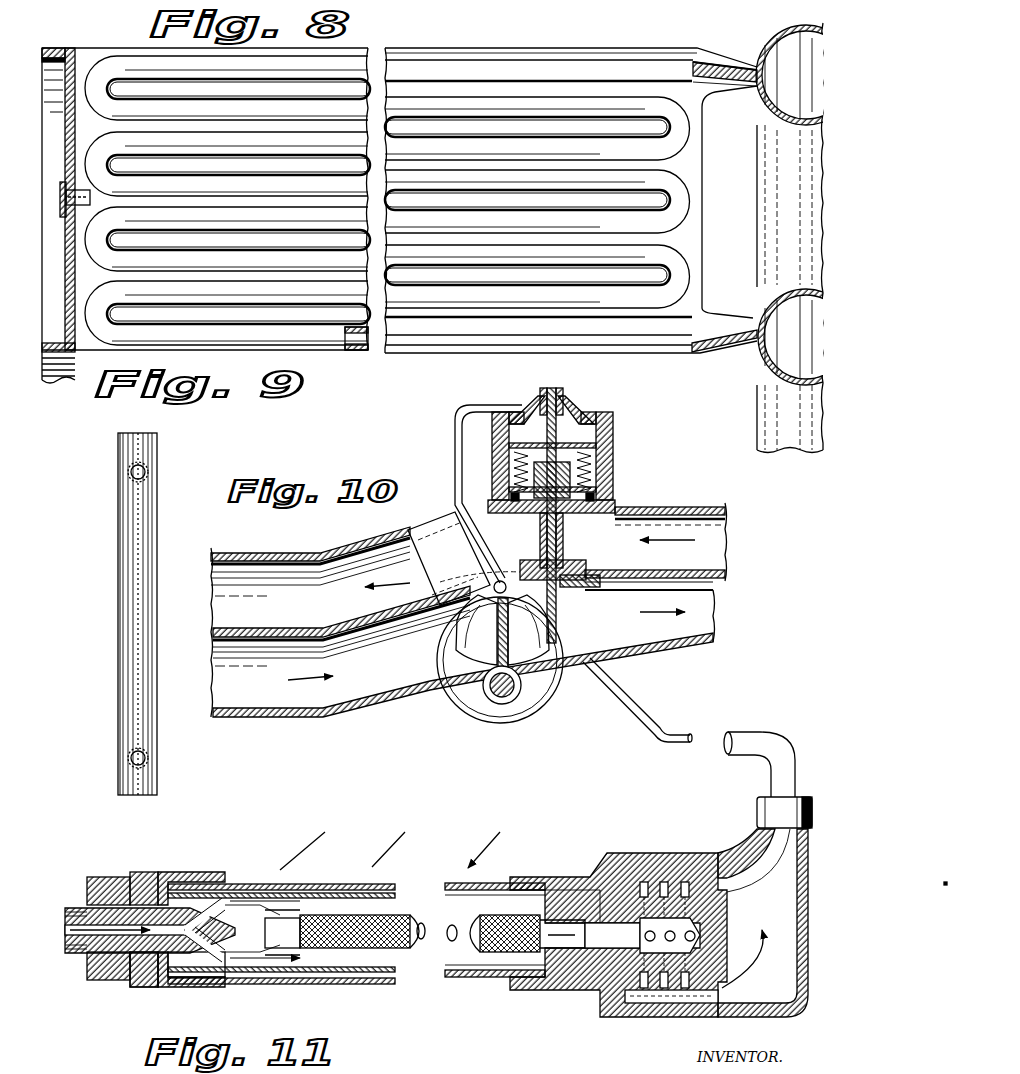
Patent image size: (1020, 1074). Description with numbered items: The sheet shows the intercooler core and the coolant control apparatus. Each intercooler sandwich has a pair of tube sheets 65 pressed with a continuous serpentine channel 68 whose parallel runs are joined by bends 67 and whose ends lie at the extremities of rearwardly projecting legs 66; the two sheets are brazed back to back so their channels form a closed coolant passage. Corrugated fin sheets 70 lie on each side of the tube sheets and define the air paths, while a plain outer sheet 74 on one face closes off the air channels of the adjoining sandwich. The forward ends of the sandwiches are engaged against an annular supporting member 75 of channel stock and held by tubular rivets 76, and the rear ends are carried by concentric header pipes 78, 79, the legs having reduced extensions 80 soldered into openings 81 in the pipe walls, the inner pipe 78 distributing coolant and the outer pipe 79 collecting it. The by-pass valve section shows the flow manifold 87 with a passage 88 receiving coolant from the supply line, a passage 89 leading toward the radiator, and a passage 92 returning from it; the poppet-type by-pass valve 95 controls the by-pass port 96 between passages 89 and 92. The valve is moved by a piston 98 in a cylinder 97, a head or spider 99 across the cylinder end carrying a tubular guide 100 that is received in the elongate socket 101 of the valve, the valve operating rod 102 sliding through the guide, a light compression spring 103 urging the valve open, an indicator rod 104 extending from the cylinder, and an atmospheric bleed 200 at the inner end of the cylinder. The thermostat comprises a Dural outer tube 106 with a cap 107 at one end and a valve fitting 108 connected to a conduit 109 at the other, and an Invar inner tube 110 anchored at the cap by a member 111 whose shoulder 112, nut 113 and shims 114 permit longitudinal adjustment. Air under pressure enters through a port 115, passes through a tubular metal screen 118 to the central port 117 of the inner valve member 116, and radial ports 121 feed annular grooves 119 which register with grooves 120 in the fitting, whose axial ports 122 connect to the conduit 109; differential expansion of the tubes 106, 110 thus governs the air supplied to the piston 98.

In FIG. 9, the tube sheet 65 is at (533, 48).
In FIG. 10, the tube sheet 65 is at (146, 452).
In FIG. 9, the leg 66 is at (716, 62).
In FIG. 10, the leg 66 is at (150, 472).
In FIG. 9, the bend 67 is at (682, 268).
In FIG. 8, the serpentine channel 68 is at (355, 338).
In FIG. 9, the serpentine channel 68 is at (698, 62).
In FIG. 10, the serpentine channel 68 is at (136, 472).
In FIG. 10, the fin sheet 70 is at (158, 531).
In FIG. 10, the plain outer sheet 74 is at (120, 578).
In FIG. 8, the annular supporting member 75 is at (75, 60).
In FIG. 8, the tubular rivet 76 is at (90, 198).
In FIG. 9, the inner header pipe 78 is at (763, 400).
In FIG. 9, the outer header pipe 79 is at (765, 40).
In FIG. 9, the extension 80 is at (752, 342).
In FIG. 9, the opening 81 is at (755, 92).
In FIG. 10, the flow manifold 87 is at (435, 520).
In FIG. 10, the passage 88 is at (372, 690).
In FIG. 10, the passage 89 is at (678, 637).
In FIG. 10, the passage 92 is at (660, 522).
In FIG. 10, the by-pass valve 95 is at (580, 560).
In FIG. 10, the by-pass port 96 is at (588, 582).
In FIG. 10, the cylinder 97 is at (598, 460).
In FIG. 10, the piston 98 is at (586, 445).
In FIG. 10, the head or spider 99 is at (536, 503).
In FIG. 10, the tubular guide 100 is at (558, 520).
In FIG. 10, the socket 101 is at (497, 584).
In FIG. 10, the valve operating rod 102 is at (562, 592).
In FIG. 10, the compression spring 103 is at (594, 480).
In FIG. 10, the indicator rod 104 is at (566, 420).
In FIG. 11, the outer tube 106 is at (335, 880).
In FIG. 11, the cap 107 is at (190, 872).
In FIG. 11, the valve fitting 108 is at (603, 878).
In FIG. 10, the conduit 109 is at (650, 728).
In FIG. 11, the conduit 109 is at (760, 768).
In FIG. 11, the inner tube 110 is at (390, 888).
In FIG. 11, the member 111 is at (190, 962).
In FIG. 11, the shoulder 112 is at (150, 962).
In FIG. 11, the nut 113 is at (100, 876).
In FIG. 11, the shims 114 is at (152, 872).
In FIG. 11, the port 115 is at (100, 930).
In FIG. 11, the inner valve member 116 is at (600, 990).
In FIG. 11, the central port 117 is at (640, 950).
In FIG. 11, the tubular metal screen 118 is at (500, 945).
In FIG. 11, the annular grooves 119 is at (690, 900).
In FIG. 11, the annular grooves 120 is at (660, 882).
In FIG. 11, the radial ports 121 is at (695, 937).
In FIG. 11, the axial ports 122 is at (680, 1000).
In FIG. 10, the atmospheric bleed 200 is at (604, 494).